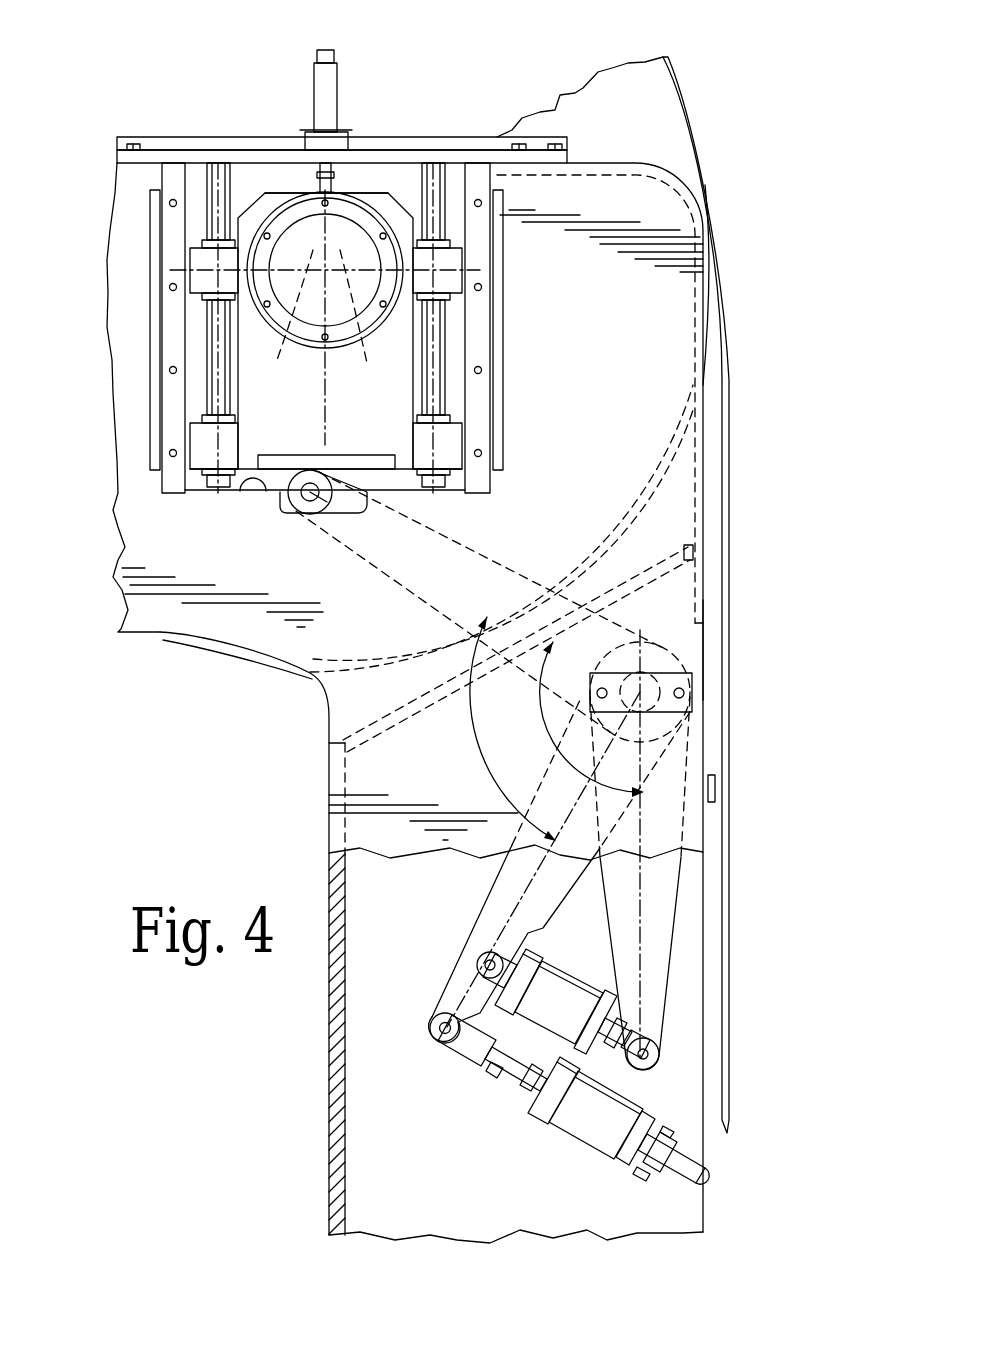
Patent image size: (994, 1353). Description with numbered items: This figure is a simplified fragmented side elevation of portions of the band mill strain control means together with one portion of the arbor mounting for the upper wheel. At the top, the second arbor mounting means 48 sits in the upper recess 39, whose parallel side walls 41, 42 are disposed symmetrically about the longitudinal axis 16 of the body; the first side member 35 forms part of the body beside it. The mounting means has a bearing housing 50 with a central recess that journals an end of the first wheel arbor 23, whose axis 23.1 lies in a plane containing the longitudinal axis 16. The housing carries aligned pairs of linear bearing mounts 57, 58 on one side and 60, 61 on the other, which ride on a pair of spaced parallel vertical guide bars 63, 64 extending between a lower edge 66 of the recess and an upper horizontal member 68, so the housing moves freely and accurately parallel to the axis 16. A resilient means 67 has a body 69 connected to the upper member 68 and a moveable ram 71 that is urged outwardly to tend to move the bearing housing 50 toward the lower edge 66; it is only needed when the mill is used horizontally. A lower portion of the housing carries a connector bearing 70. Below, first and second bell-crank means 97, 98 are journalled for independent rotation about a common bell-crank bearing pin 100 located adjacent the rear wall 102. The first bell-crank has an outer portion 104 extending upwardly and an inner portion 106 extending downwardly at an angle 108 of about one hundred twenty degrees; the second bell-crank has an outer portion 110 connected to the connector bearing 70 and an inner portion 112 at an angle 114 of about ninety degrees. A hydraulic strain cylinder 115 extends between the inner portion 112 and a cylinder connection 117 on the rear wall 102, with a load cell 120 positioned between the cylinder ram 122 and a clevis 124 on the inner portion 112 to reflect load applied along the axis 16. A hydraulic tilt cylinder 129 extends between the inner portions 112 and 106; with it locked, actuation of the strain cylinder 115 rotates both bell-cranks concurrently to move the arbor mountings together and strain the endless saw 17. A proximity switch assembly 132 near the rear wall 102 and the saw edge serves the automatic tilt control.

The longitudinal axis 16 is at (325, 425).
The endless saw 17 is at (728, 525).
The first wheel arbor 23 is at (347, 300).
The axis of the first arbor 23.1 is at (308, 324).
The first side member 35 is at (625, 334).
The upper recess 39 is at (370, 126).
The side wall 41 is at (163, 197).
The side wall 42 is at (470, 180).
The second arbor mounting means 48 is at (265, 180).
The bearing housing 50 is at (398, 330).
The linear bearing mount 57 is at (455, 262).
The linear bearing mount 58 is at (455, 440).
The linear bearing mount 60 is at (197, 262).
The linear bearing mount 61 is at (200, 445).
The vertical guide bar 63 is at (433, 378).
The vertical guide bar 64 is at (222, 340).
The lower edge of the recess 66 is at (243, 483).
The resilient means 67 is at (288, 63).
The upper horizontal member 68 is at (435, 157).
The body of the resilient means 69 is at (330, 62).
The connector bearing 70 is at (345, 500).
The moveable ram 71 is at (335, 178).
The first bell-crank means 97 is at (690, 920).
The second bell-crank means 98 is at (485, 877).
The bell-crank bearing pin 100 is at (665, 665).
The rear wall 102 is at (705, 645).
The outer portion of the first bell-crank means 104 is at (445, 535).
The inner portion of the first bell-crank means 106 is at (668, 975).
The angle 108 is at (548, 745).
The outer portion of the second bell-crank means 110 is at (440, 612).
The inner portion of the second bell-crank means 112 is at (475, 918).
The angle 114 is at (492, 780).
The hydraulic strain cylinder 115 is at (597, 1152).
The cylinder connection 117 is at (698, 1178).
The load cell 120 is at (505, 1090).
The ram of the cylinder 122 is at (527, 1095).
The clevis 124 is at (462, 1052).
The hydraulic tilt cylinder 129 is at (572, 990).
The proximity switch assembly 132 is at (718, 790).